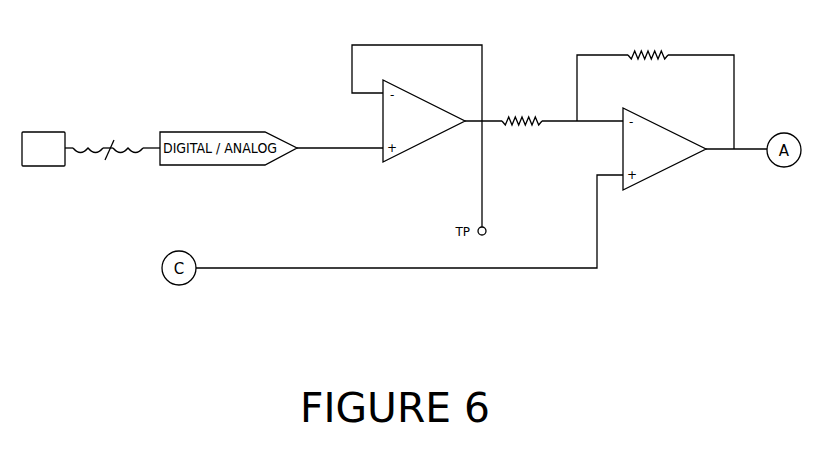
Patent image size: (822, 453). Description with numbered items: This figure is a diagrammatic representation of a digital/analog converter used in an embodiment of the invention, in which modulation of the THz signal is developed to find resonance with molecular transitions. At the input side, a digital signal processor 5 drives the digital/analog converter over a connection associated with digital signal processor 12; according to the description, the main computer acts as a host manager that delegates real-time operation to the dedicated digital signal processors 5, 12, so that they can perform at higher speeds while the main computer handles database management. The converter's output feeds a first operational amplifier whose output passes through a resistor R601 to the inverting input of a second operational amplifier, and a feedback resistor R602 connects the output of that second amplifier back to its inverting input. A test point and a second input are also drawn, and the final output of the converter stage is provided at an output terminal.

The digital signal processor 5 is at (43, 149).
The digital signal processor 12 is at (112, 141).
The input resistor R601 is at (522, 109).
The feedback resistor R602 is at (648, 43).